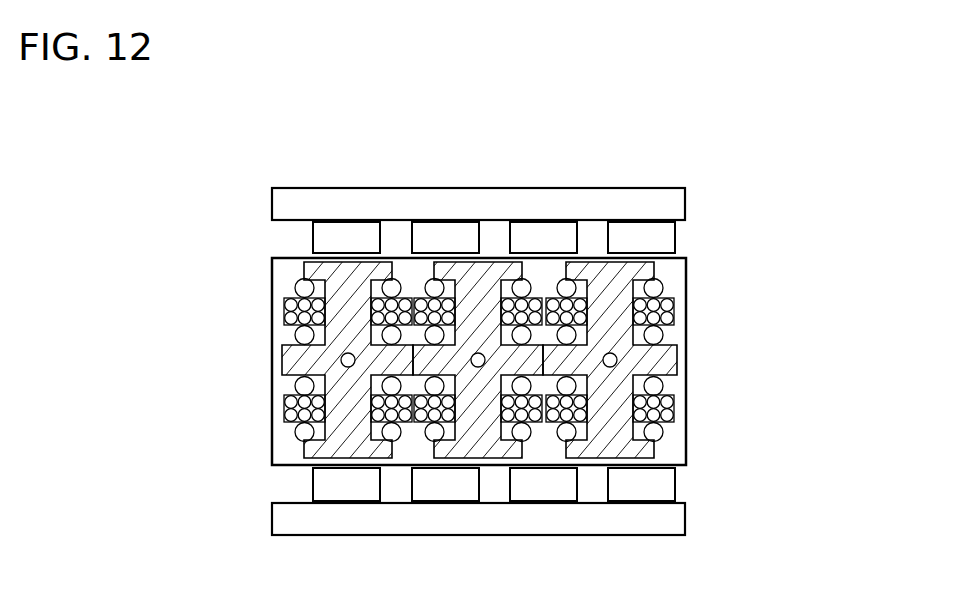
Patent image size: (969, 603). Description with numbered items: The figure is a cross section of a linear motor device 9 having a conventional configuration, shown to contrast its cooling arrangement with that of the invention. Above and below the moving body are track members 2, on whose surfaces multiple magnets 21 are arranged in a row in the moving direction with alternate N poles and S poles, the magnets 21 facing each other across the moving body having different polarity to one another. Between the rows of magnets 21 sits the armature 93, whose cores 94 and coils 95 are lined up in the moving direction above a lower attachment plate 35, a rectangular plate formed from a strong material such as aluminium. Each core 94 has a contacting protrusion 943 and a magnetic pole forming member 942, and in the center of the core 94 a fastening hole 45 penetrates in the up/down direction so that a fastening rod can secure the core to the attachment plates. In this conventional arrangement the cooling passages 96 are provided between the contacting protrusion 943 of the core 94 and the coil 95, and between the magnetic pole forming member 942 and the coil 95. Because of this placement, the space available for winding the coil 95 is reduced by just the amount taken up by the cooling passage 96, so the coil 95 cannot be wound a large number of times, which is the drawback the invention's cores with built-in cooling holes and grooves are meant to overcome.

The linear motor device 9 is at (183, 143).
The track member 2 is at (463, 200).
The magnet 21 is at (332, 227).
The lower attachment plate 35 is at (282, 270).
The armature 93 is at (736, 278).
The core 94 is at (503, 376).
The magnetic pole forming member 942 is at (655, 267).
The contacting protrusion 943 is at (282, 352).
The fastening hole 45 is at (341, 361).
The coil 95 is at (676, 306).
The cooling passage 96 is at (655, 286).